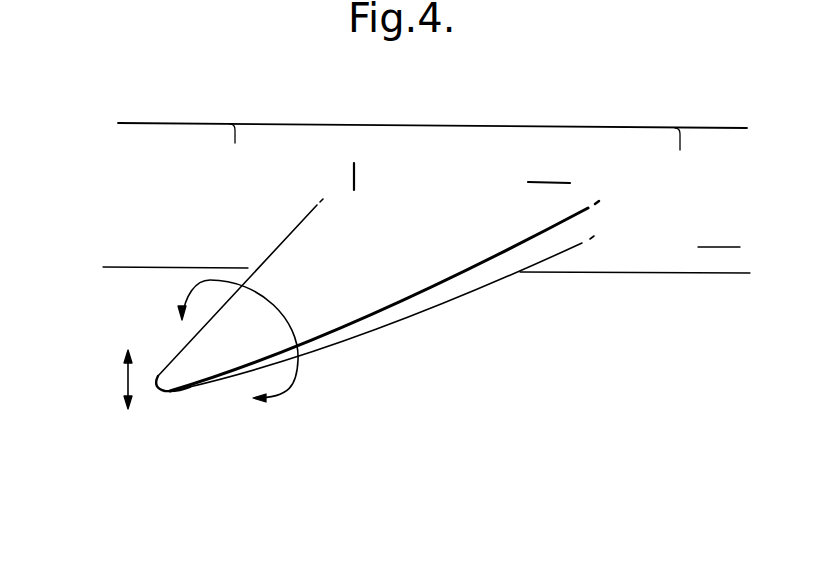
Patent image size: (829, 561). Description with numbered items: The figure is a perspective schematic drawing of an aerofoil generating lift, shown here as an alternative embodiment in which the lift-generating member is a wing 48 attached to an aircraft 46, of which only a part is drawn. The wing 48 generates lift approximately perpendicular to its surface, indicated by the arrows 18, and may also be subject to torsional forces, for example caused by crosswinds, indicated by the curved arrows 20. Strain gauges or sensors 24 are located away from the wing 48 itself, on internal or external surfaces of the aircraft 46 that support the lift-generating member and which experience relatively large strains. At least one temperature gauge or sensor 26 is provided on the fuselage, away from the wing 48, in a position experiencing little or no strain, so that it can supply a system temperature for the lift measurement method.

The arrows 18 is at (125, 380).
The arrows 20 is at (297, 388).
The strain gauges or sensors 24 is at (350, 171).
The temperature gauge or sensor 26 is at (718, 247).
The aircraft 46 is at (627, 148).
The wing 48 is at (462, 280).